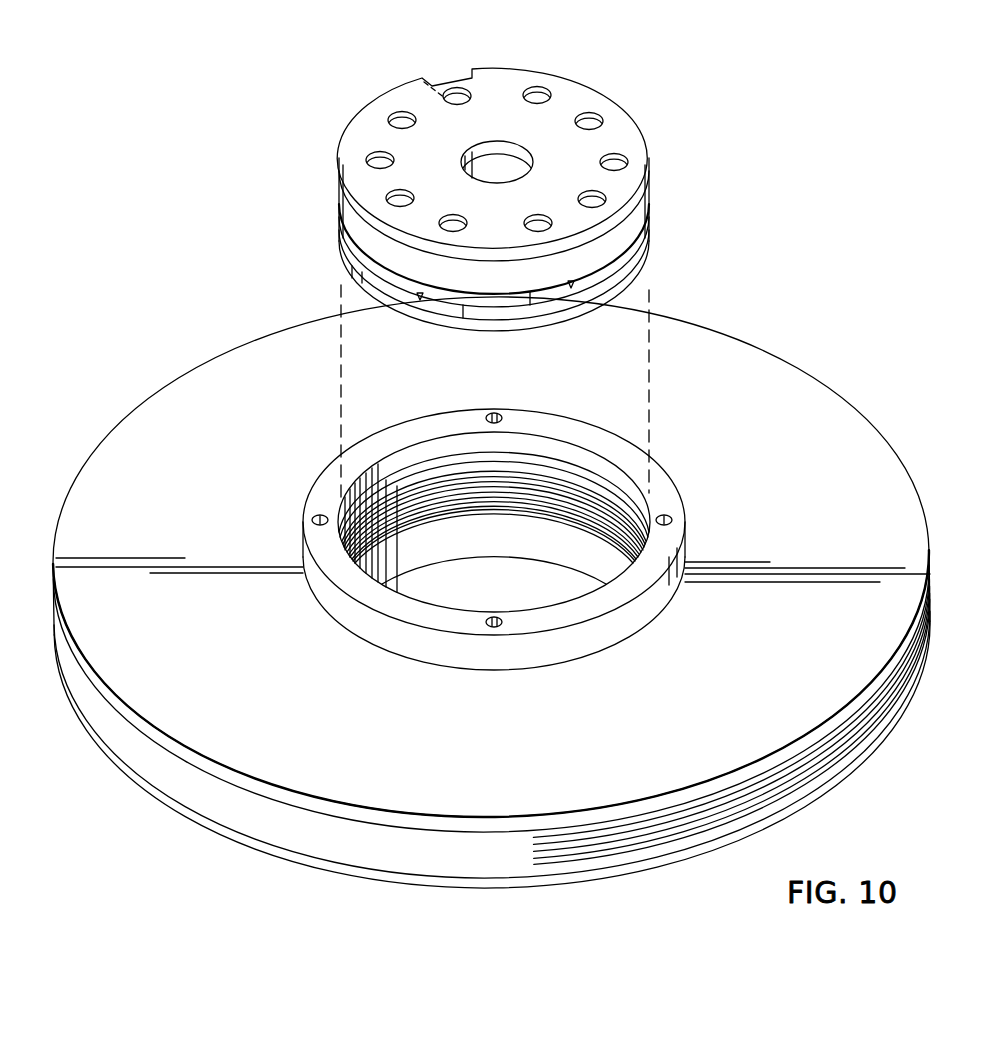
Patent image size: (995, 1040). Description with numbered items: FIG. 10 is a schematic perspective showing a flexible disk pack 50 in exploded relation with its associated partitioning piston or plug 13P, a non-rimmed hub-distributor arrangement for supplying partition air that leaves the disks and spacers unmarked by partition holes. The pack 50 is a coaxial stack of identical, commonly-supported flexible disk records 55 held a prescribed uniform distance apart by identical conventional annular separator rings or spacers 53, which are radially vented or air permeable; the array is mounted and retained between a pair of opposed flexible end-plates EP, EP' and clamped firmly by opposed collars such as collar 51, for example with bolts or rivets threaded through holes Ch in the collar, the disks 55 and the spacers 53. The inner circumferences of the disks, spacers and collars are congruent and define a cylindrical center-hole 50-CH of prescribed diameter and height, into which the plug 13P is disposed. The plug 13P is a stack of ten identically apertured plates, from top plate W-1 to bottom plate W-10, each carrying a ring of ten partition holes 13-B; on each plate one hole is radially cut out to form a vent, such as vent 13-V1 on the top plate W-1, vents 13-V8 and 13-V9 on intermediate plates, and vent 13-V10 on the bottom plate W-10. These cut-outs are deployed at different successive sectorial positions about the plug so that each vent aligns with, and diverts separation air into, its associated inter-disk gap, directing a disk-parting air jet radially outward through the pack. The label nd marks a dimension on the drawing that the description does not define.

The top plate W-1 is at (548, 27).
The radial vent 13-V1 is at (446, 73).
The partition holes 13-B is at (589, 115).
The partitioning plug 13P is at (654, 150).
The bottom plate W-10 is at (641, 268).
The radial vent 13-V10 is at (352, 284).
The radial vent 13-V9 is at (438, 308).
The radial vent 13-V8 is at (547, 296).
The flexible disk pack 50 is at (205, 393).
The end-plate EP is at (493, 608).
The collar 51 is at (367, 452).
The holes Ch is at (322, 515).
The cylindrical center-hole 50-CH is at (592, 465).
The spacers 53 is at (500, 506).
The flexible disk records 55 is at (548, 500).
The end-plate EP' is at (494, 753).
The dimension nd is at (520, 872).